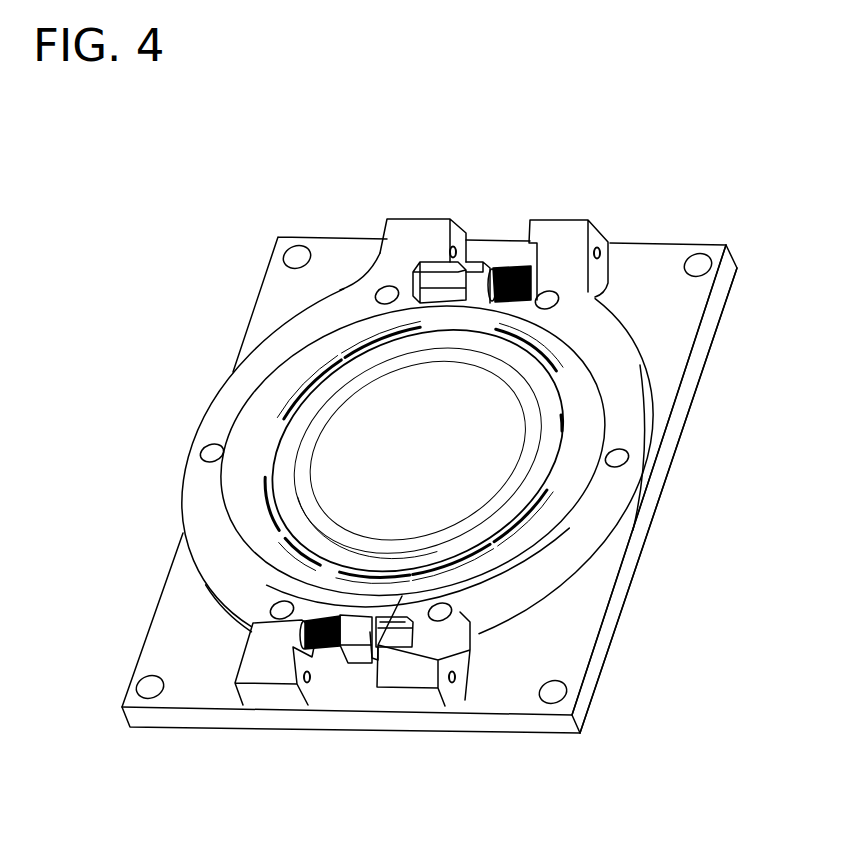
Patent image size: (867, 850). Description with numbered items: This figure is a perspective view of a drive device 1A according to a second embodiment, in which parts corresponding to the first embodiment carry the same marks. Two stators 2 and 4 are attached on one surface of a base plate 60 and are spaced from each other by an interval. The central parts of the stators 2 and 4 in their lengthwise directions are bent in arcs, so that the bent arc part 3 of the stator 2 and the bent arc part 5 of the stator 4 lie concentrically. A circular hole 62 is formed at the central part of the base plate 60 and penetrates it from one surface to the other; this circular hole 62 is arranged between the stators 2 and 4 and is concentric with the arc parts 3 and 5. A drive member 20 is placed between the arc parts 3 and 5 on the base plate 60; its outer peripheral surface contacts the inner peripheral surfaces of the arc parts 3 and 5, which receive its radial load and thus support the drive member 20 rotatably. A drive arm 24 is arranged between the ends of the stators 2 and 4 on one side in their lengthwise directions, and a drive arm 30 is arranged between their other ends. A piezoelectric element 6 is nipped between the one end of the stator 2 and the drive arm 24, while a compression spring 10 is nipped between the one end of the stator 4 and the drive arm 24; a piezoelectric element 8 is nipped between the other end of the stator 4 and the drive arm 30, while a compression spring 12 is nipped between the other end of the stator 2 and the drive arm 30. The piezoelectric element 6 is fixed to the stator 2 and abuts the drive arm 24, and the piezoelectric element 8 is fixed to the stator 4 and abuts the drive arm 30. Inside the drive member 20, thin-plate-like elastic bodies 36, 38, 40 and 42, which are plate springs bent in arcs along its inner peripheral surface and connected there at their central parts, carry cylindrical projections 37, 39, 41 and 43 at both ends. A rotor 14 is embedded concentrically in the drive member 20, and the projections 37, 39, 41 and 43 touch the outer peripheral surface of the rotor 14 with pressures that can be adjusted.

The drive device 1A is at (263, 217).
The stator 2 is at (381, 260).
The bent arc part 3 is at (207, 442).
The stator 4 is at (582, 235).
The bent arc part 5 is at (630, 438).
The piezoelectric element 6 is at (435, 273).
The piezoelectric element 8 is at (392, 632).
The compression spring 10 is at (515, 270).
The compression spring 12 is at (333, 643).
The rotor 14 is at (543, 457).
The drive member 20 is at (257, 433).
The drive arm 24 is at (482, 272).
The drive arm 30 is at (355, 635).
The elastic body 36 is at (520, 363).
The cylindrical projection 37 is at (493, 338).
The elastic body 38 is at (467, 547).
The cylindrical projection 39 is at (537, 487).
The elastic body 40 is at (297, 540).
The cylindrical projection 41 is at (270, 478).
The elastic body 42 is at (363, 360).
The cylindrical projection 43 is at (420, 334).
The base plate 60 is at (677, 363).
The circular hole 62 is at (360, 433).